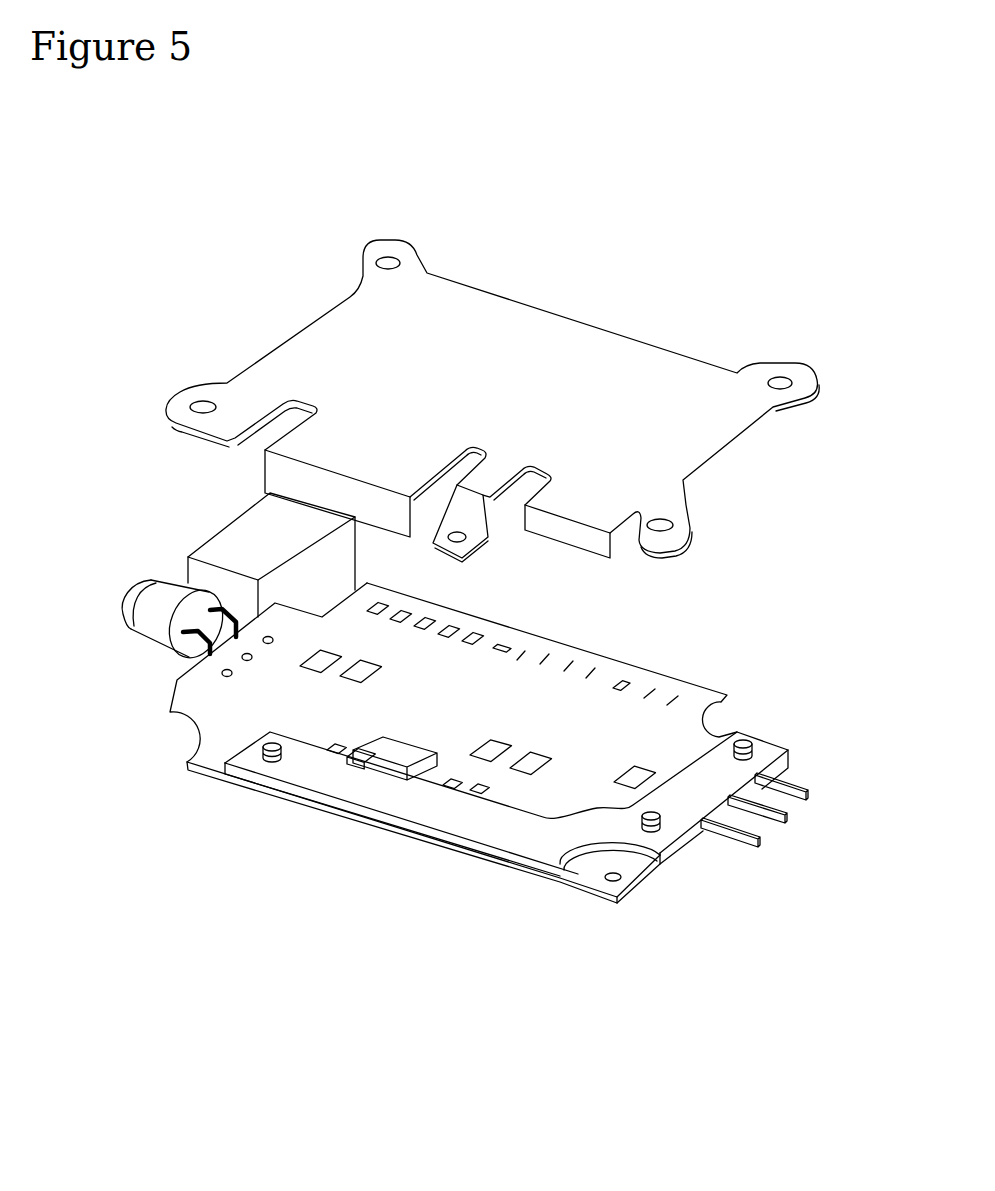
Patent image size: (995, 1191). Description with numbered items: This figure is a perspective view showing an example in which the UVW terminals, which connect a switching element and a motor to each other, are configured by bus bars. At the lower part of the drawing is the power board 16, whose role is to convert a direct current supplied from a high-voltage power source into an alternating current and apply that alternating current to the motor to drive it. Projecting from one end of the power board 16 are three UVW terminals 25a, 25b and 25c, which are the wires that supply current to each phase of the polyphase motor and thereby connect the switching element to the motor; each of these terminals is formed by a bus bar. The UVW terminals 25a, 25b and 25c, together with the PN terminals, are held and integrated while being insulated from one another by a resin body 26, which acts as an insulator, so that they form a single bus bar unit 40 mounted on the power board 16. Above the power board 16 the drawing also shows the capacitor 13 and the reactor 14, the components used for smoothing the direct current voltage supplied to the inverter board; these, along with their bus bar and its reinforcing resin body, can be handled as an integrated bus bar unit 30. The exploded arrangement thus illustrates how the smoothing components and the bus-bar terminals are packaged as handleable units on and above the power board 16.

The capacitor 13 is at (228, 535).
The reactor 14 is at (145, 596).
The power board 16 is at (703, 692).
The UVW terminal 25a is at (793, 778).
The UVW terminal 25b is at (785, 804).
The UVW terminal 25c is at (722, 840).
The resin body 26 is at (503, 856).
The bus bar unit 30 is at (677, 367).
The bus bar unit 40 is at (547, 814).